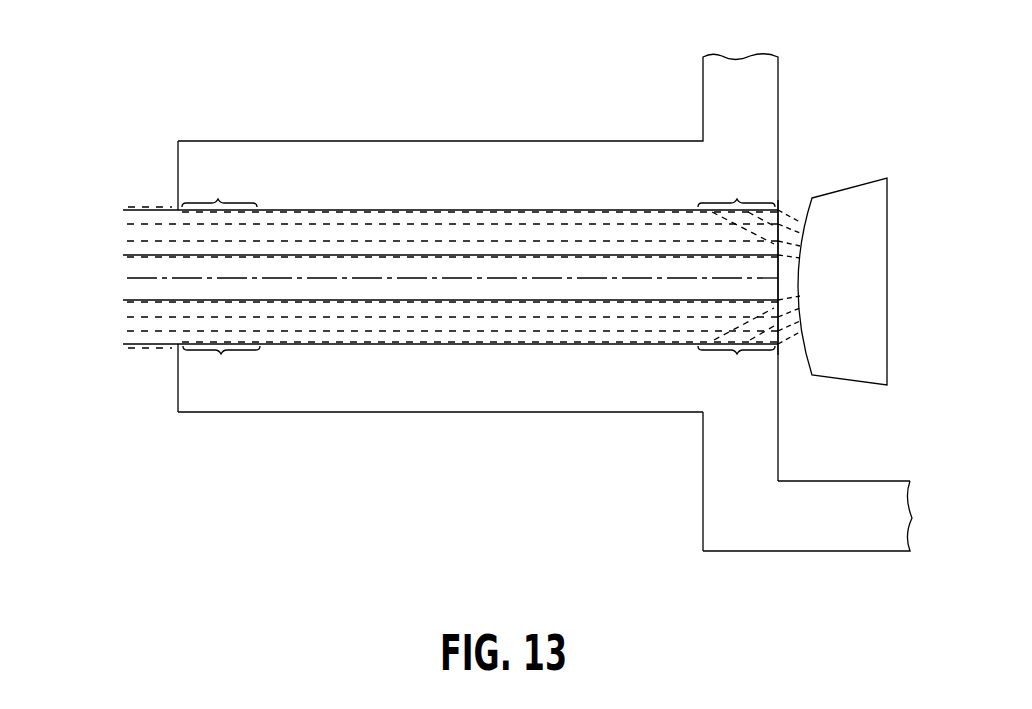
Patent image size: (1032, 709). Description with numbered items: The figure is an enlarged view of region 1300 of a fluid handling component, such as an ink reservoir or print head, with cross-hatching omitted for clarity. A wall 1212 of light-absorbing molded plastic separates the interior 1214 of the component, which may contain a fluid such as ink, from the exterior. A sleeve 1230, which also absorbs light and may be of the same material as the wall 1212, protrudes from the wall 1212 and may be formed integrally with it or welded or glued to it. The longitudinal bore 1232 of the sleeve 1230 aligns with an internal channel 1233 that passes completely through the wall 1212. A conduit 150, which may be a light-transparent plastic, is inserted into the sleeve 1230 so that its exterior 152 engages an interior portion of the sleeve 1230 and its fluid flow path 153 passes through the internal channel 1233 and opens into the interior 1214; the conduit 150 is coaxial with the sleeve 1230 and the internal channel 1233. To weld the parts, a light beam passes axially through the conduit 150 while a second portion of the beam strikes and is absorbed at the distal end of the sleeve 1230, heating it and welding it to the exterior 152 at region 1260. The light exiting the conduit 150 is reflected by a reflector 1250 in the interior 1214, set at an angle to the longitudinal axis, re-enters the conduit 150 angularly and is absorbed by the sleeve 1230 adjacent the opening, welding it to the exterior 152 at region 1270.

The region 1300 is at (545, 319).
The sleeve 1230 is at (565, 141).
The longitudinal bore 1232 is at (178, 210).
The internal channel 1233 is at (780, 208).
The region 1260 is at (217, 199).
The region 1270 is at (736, 276).
The reflector 1250 is at (862, 285).
The interior 1214 is at (873, 438).
The wall 1212 is at (818, 535).
The conduit 150 is at (128, 247).
The exterior 152 is at (374, 345).
The fluid flow path 153 is at (150, 287).